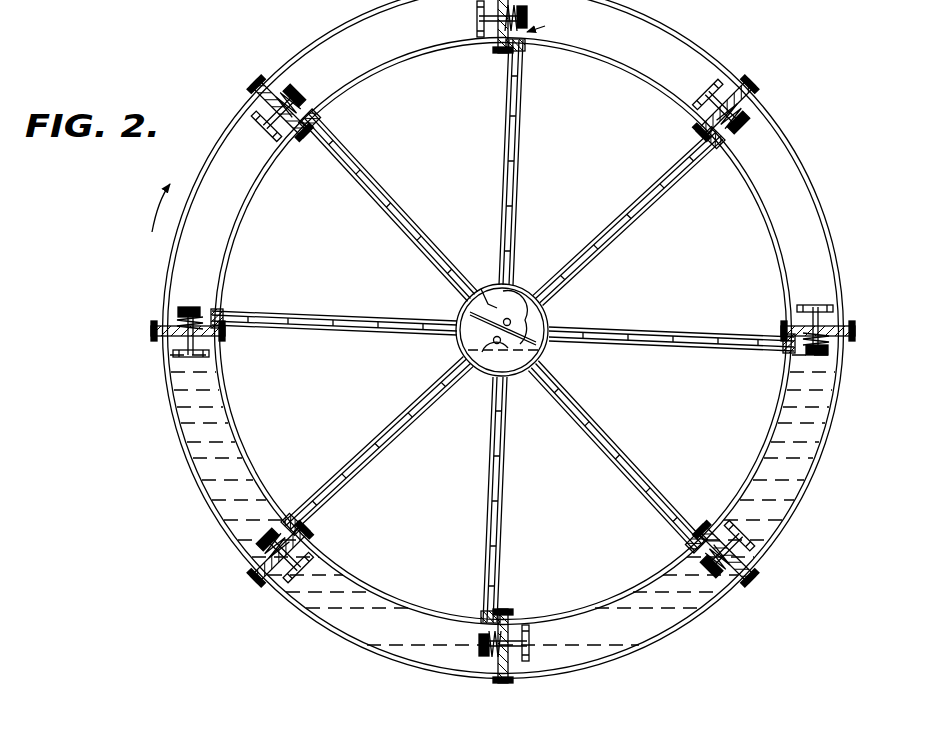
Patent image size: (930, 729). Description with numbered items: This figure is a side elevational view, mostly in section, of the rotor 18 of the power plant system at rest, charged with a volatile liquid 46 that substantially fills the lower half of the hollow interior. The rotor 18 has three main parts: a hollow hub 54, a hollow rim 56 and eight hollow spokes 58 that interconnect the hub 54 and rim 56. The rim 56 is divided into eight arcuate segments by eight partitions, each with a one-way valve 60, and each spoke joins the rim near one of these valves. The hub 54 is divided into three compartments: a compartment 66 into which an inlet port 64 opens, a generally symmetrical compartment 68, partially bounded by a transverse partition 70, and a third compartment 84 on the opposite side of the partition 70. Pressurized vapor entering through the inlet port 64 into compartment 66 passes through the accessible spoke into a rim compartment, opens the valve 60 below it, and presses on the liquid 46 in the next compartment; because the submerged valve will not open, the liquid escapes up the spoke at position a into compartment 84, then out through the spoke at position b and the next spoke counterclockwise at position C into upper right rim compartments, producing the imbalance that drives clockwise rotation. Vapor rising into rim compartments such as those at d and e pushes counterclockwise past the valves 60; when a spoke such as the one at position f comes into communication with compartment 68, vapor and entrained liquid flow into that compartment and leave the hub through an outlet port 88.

The wheel 18 is at (176, 0).
The liquid 46 is at (333, 628).
The hollow rim 56 is at (797, 152).
The hollow spokes 58 is at (353, 172).
The one-way valve 60 is at (286, 96).
The hollow hub 54 is at (450, 305).
The compartment 68 is at (497, 298).
The outlet port 88 is at (532, 315).
The compartment 66 is at (460, 338).
The transverse partition 70 is at (534, 347).
The compartment 84 is at (492, 368).
The inlet port 64 is at (511, 367).
The spoke position a is at (399, 438).
The spoke position b is at (640, 203).
The spoke position C is at (524, 130).
The rim compartment d is at (798, 212).
The rim compartment e is at (648, 40).
The spoke position f is at (386, 203).